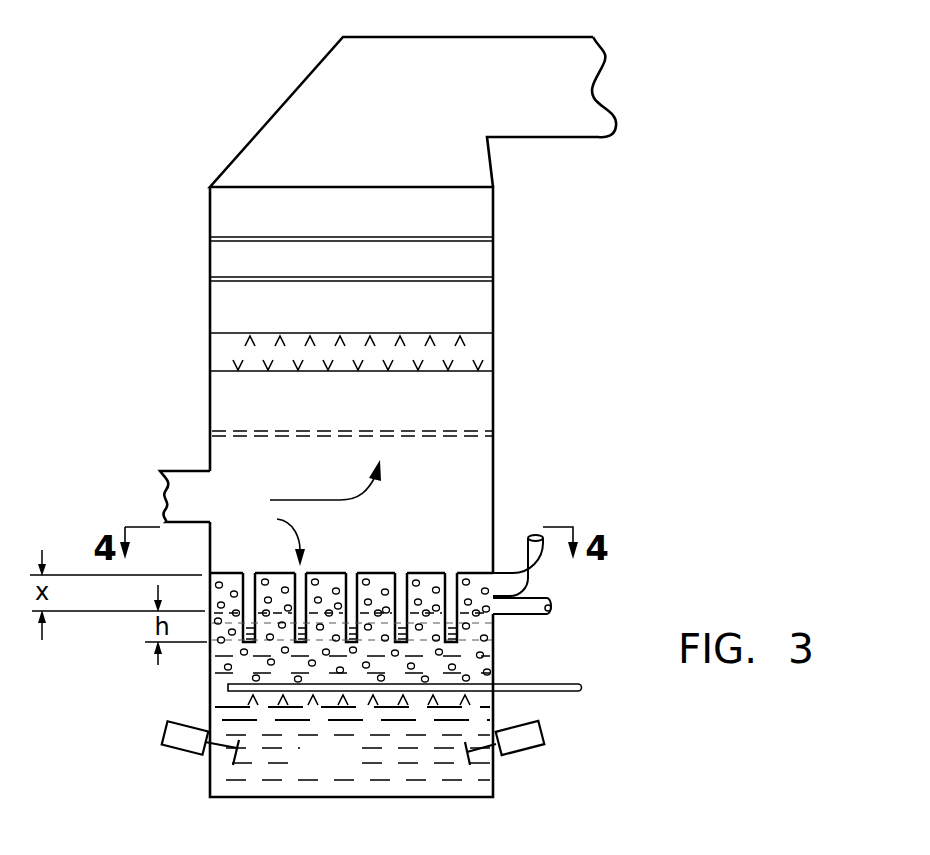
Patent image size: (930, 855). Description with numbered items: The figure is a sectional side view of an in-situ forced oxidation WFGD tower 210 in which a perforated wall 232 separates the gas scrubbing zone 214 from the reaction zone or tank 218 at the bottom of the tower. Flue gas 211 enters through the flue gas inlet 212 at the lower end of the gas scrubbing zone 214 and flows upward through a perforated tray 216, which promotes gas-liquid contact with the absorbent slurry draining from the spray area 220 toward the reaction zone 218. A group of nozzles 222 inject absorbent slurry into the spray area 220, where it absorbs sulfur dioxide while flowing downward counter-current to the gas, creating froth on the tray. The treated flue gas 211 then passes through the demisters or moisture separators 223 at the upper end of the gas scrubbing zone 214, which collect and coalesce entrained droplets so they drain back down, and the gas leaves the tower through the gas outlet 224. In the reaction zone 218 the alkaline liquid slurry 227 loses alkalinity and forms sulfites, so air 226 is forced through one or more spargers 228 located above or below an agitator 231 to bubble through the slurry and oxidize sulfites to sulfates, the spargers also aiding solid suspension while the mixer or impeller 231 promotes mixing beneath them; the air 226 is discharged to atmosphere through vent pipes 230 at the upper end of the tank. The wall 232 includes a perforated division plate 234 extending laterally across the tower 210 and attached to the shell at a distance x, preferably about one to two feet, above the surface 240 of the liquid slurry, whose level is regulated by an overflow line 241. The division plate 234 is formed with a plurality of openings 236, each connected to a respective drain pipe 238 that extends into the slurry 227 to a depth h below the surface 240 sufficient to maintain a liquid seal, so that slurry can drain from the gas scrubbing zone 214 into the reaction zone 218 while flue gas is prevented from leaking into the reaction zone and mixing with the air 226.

The in-situ forced oxidation WFGD tower 210 is at (163, 237).
The flue gas 211 is at (345, 497).
The flue gas inlet 212 is at (165, 497).
The gas scrubbing zone 214 is at (347, 411).
The perforated tray 216 is at (462, 433).
The reaction zone or tank 218 is at (310, 761).
The spray area 220 is at (485, 350).
The nozzles 222 is at (470, 339).
The demisters or moisture separators 223 is at (478, 259).
The gas outlet 224 is at (612, 105).
The air 226 is at (228, 667).
The alkaline liquid slurry 227 is at (277, 774).
The spargers 228 is at (472, 706).
The vent pipes 230 is at (538, 535).
The agitator 231 is at (523, 755).
The perforated wall 232 is at (268, 535).
The perforated division plate 234 is at (367, 573).
The openings 236 is at (250, 578).
The drain pipe 238 is at (457, 588).
The surface of the liquid slurry 240 is at (477, 615).
The overflow line 241 is at (545, 598).